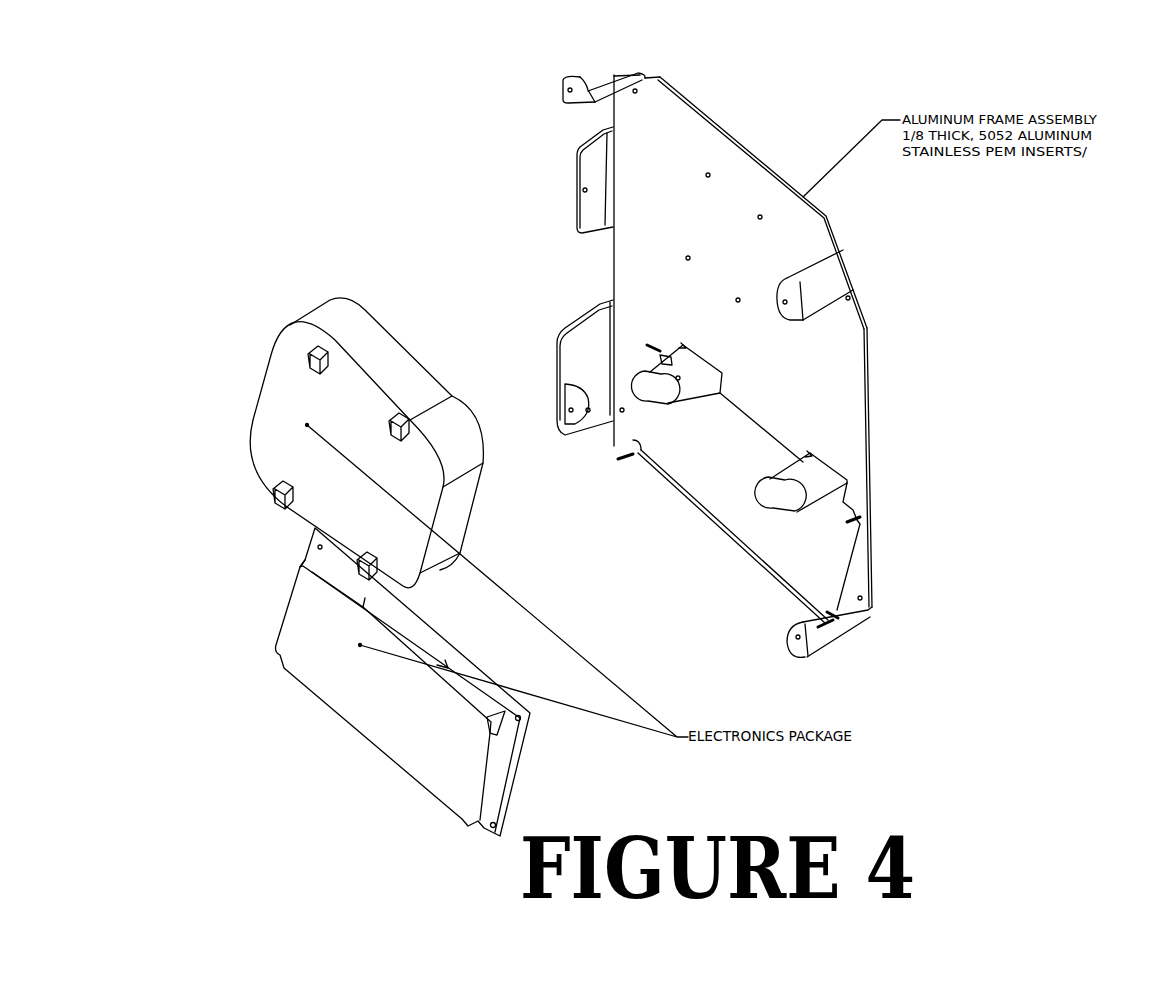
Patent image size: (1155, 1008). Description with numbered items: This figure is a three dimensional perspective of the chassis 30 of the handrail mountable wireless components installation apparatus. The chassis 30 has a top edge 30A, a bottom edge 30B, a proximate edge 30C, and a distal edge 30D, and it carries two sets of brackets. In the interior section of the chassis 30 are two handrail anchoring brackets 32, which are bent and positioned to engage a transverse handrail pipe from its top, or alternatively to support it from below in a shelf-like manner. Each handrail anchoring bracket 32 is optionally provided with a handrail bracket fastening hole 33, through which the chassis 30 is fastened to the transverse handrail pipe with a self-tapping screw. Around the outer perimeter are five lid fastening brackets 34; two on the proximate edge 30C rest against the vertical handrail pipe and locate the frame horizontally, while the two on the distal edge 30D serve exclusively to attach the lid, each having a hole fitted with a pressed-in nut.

The chassis 30 is at (810, 361).
The top edge 30A is at (740, 137).
The bottom edge 30B is at (700, 518).
The proximate edge 30C is at (611, 271).
The distal edge 30D is at (878, 451).
The handrail anchoring bracket 32 is at (650, 388).
The handrail bracket fastening hole 33 is at (805, 486).
The lid fastening bracket 34 is at (572, 165).